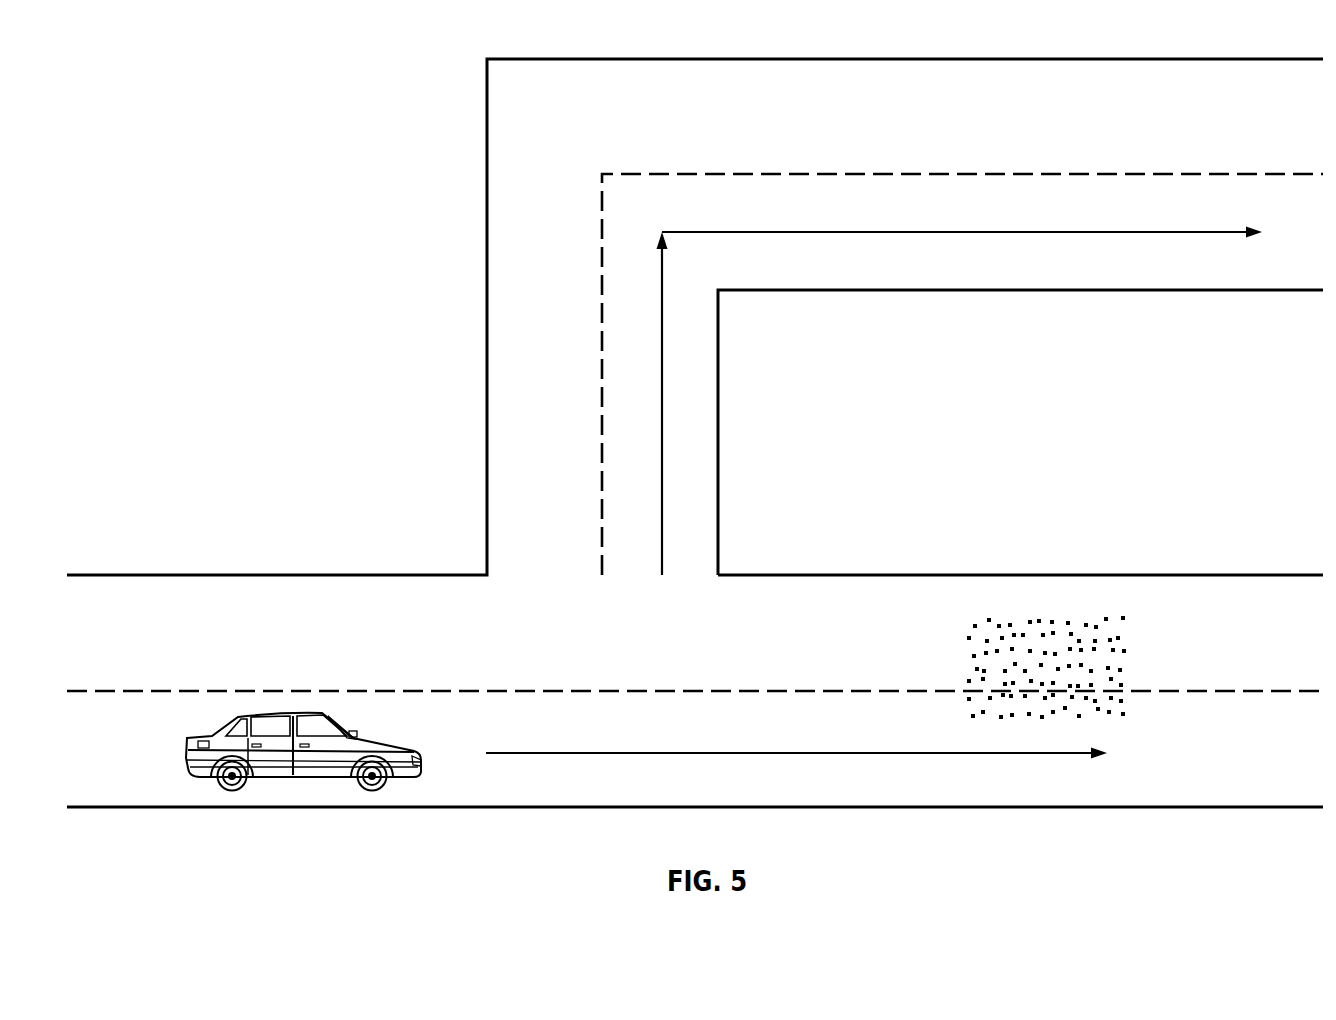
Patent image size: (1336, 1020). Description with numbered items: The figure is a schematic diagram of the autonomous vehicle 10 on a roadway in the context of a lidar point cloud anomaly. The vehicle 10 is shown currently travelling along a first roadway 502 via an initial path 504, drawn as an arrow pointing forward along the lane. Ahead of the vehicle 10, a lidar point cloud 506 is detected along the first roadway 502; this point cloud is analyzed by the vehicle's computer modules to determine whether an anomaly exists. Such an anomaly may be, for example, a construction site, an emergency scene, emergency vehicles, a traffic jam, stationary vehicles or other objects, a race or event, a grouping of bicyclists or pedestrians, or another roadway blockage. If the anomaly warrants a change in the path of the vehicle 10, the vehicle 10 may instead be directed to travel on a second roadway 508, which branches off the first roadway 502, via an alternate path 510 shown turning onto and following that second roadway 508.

The autonomous vehicle 10 is at (184, 760).
The first roadway 502 is at (1208, 767).
The initial path 504 is at (742, 754).
The lidar point cloud 506 is at (1113, 650).
The second roadway 508 is at (1047, 280).
The alternate path 510 is at (662, 287).